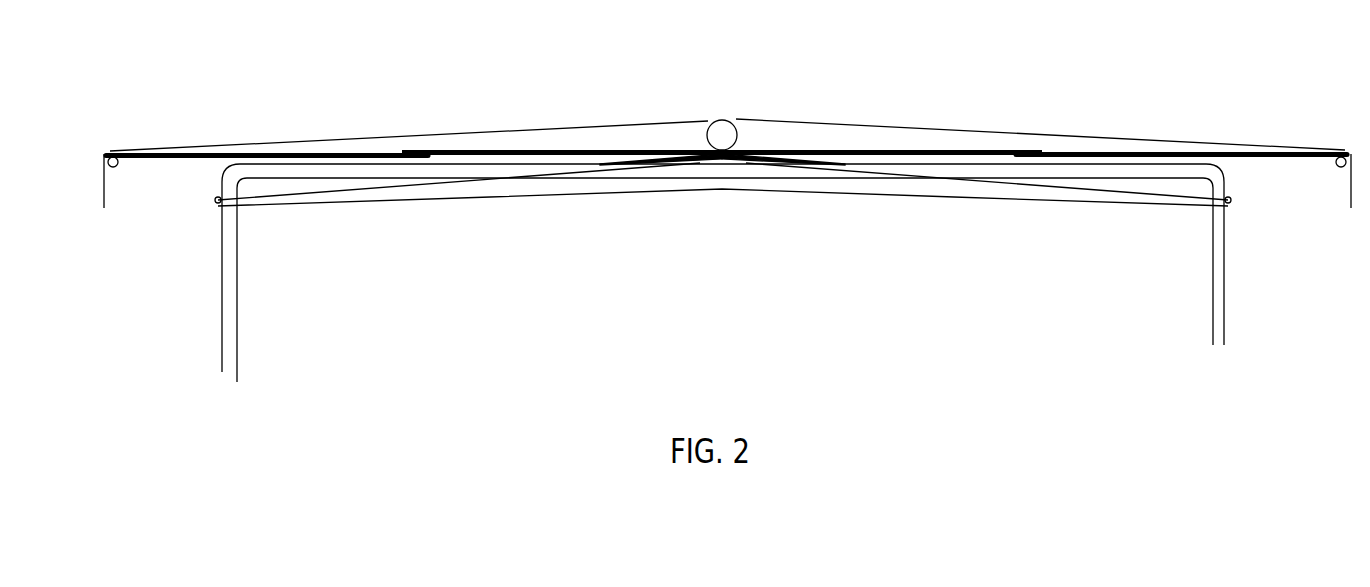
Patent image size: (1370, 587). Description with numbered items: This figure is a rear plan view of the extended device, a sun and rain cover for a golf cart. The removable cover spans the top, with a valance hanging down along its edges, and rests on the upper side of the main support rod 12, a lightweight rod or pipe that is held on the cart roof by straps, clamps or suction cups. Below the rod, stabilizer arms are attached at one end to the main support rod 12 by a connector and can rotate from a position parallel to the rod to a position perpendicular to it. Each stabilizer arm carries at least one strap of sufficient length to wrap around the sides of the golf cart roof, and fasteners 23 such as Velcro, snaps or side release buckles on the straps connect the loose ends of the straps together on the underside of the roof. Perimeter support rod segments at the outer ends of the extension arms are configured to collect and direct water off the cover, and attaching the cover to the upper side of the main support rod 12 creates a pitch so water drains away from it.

The main support rod 12 is at (713, 137).
The fasteners 23 is at (700, 190).